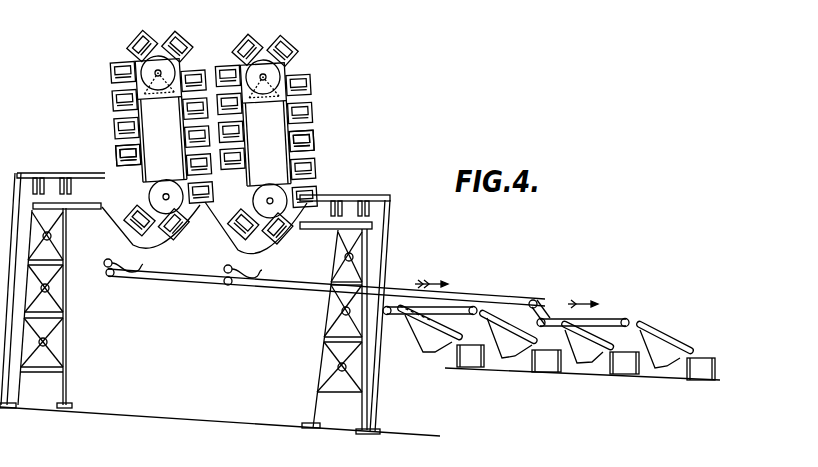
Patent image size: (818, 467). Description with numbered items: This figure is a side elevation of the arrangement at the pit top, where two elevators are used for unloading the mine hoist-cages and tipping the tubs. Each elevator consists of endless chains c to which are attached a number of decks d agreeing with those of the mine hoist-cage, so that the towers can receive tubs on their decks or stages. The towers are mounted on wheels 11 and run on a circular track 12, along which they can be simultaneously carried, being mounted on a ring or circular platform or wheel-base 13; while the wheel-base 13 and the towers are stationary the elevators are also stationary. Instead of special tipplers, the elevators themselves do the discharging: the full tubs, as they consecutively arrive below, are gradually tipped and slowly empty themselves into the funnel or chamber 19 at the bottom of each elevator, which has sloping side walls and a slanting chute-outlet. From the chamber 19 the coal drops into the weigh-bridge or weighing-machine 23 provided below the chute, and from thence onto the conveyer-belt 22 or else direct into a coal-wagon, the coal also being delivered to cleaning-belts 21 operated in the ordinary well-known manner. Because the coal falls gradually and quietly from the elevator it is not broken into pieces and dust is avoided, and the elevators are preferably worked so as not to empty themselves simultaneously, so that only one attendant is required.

The wheels 11 is at (28, 172).
The circular track 12 is at (373, 223).
The wheel-base 13 is at (322, 197).
The chamber 19 is at (182, 232).
The cleaning-belts 21 is at (474, 361).
The conveyer-belt 22 is at (262, 281).
The weighing-machine 23 is at (143, 264).
The endless chains c is at (213, 137).
The decks d is at (106, 149).